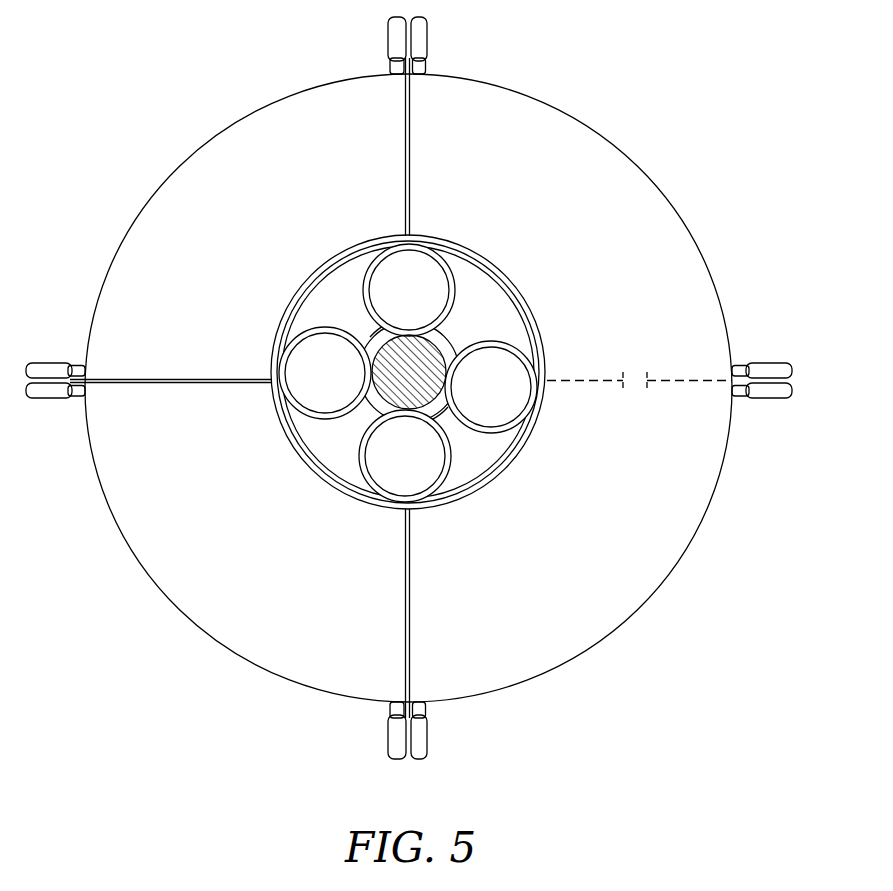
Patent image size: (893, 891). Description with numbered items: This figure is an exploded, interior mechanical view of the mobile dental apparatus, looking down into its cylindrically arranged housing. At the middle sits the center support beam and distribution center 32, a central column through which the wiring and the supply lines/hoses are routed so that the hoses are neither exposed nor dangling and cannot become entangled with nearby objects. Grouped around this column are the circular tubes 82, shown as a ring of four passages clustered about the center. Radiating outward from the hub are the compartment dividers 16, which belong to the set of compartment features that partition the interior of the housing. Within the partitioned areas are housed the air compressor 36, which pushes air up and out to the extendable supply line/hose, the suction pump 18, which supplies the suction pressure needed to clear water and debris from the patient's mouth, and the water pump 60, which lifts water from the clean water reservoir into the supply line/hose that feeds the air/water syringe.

The compartment dividers 16 is at (404, 138).
The suction pump 18 is at (668, 536).
The center support beam and distribution center 32 is at (423, 367).
The air compressor 36 is at (237, 158).
The water pump 60 is at (270, 648).
The tubes 82 is at (382, 453).